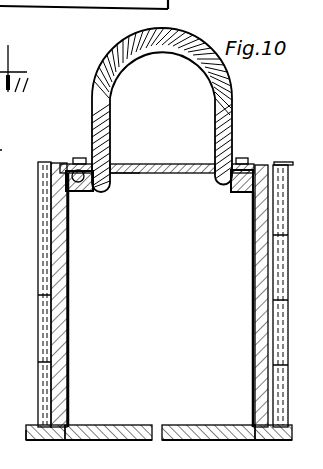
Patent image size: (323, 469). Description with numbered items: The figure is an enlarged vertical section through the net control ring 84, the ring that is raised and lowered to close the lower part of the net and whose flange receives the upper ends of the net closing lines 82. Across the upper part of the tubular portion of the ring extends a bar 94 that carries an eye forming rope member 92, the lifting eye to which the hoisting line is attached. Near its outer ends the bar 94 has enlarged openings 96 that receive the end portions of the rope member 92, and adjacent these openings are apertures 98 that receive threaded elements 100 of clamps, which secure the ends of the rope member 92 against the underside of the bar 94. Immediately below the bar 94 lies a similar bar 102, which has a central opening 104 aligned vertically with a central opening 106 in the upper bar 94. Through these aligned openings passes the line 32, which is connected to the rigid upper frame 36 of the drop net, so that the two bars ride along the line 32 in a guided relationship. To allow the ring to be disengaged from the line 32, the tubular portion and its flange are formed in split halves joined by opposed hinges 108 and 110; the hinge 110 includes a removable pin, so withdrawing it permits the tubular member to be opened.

The line 32 is at (0, 32).
The net control ring 84 is at (15, 55).
The net closing lines 82 is at (0, 143).
The eye forming rope member 92 is at (237, 99).
The bar 94 is at (123, 164).
The enlarged openings 96 is at (213, 175).
The apertures 98 is at (75, 164).
The threaded elements 100 is at (77, 191).
The bar 102 is at (97, 432).
The central opening 104 is at (172, 430).
The central opening 106 is at (112, 174).
The hinge 108 is at (37, 210).
The hinge 110 is at (282, 222).
The rigid upper frame 36 is at (18, 468).